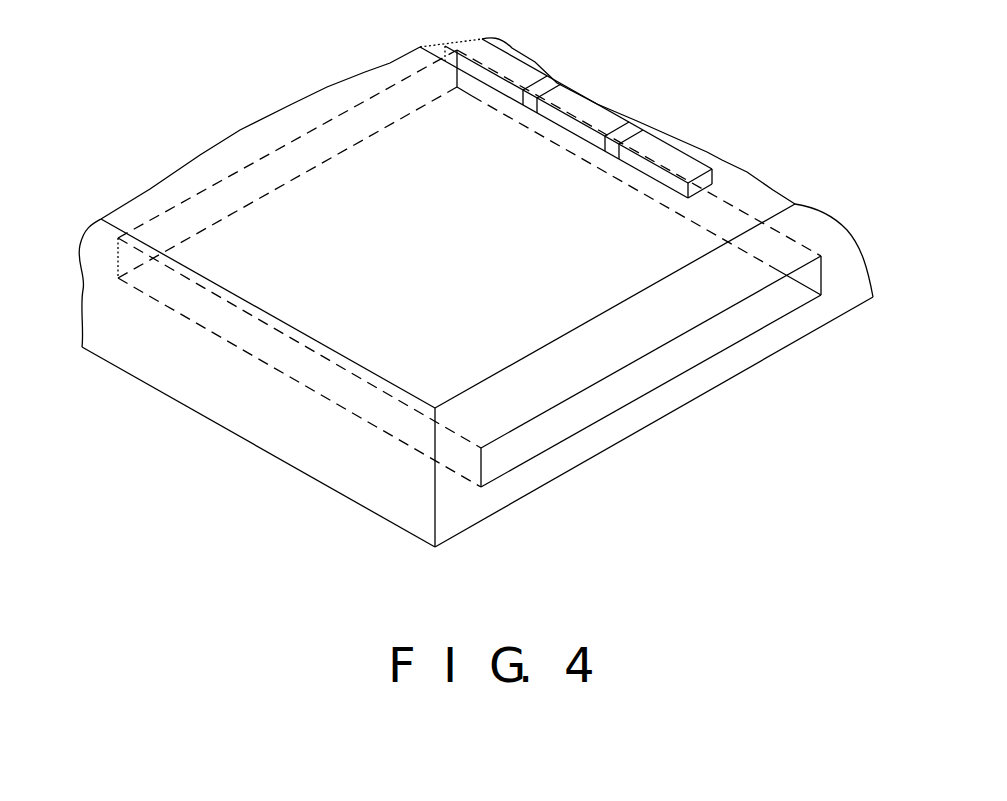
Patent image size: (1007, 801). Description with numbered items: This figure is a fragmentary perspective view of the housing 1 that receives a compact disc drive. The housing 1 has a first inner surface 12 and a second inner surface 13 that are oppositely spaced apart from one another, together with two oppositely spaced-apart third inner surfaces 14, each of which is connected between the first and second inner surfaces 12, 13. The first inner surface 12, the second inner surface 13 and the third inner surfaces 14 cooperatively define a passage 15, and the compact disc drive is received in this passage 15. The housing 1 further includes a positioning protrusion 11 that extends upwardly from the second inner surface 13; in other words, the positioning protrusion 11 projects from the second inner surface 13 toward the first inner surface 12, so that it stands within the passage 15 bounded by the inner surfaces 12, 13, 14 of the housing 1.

The housing 1 is at (753, 367).
The positioning protrusion 11 is at (381, 132).
The first inner surface 12 is at (622, 268).
The second inner surface 13 is at (607, 397).
The third inner surfaces 14 is at (322, 380).
The passage 15 is at (556, 427).